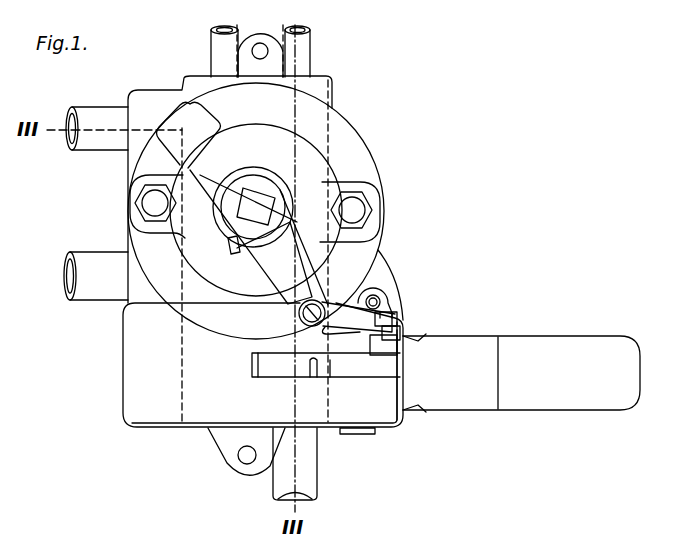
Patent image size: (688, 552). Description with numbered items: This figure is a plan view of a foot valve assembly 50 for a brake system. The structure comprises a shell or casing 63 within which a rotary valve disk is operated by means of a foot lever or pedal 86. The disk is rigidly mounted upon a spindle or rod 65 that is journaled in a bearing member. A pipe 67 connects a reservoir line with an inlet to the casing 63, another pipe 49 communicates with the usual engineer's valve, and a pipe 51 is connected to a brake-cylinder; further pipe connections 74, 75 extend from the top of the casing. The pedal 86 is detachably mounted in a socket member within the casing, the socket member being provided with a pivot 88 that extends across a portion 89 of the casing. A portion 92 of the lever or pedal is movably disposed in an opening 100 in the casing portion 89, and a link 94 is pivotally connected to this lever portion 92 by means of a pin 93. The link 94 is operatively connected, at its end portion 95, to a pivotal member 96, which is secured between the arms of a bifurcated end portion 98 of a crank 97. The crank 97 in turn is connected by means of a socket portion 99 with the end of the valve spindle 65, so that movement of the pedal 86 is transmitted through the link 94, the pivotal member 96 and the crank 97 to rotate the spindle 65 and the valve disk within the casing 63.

The pipe 49 is at (104, 292).
The valve housing 50 is at (425, 223).
The pipe 51 is at (312, 480).
The shell or casing 63 is at (362, 154).
The spindle or rod 65 is at (258, 197).
The pipe 67 is at (112, 142).
The pipe 74 is at (307, 53).
The pipe 75 is at (213, 50).
The foot lever or pedal 86 is at (545, 403).
The pivot 88 is at (379, 302).
The casing portion 89 is at (382, 418).
The lever portion 92 is at (366, 371).
The pin 93 is at (390, 314).
The link 94 is at (403, 343).
The end portion of link 95 is at (320, 328).
The pivotal member 96 is at (323, 300).
The crank 97 is at (260, 258).
The bifurcated end portion 98 is at (299, 313).
The socket portion 99 is at (252, 182).
The opening 100 is at (266, 357).